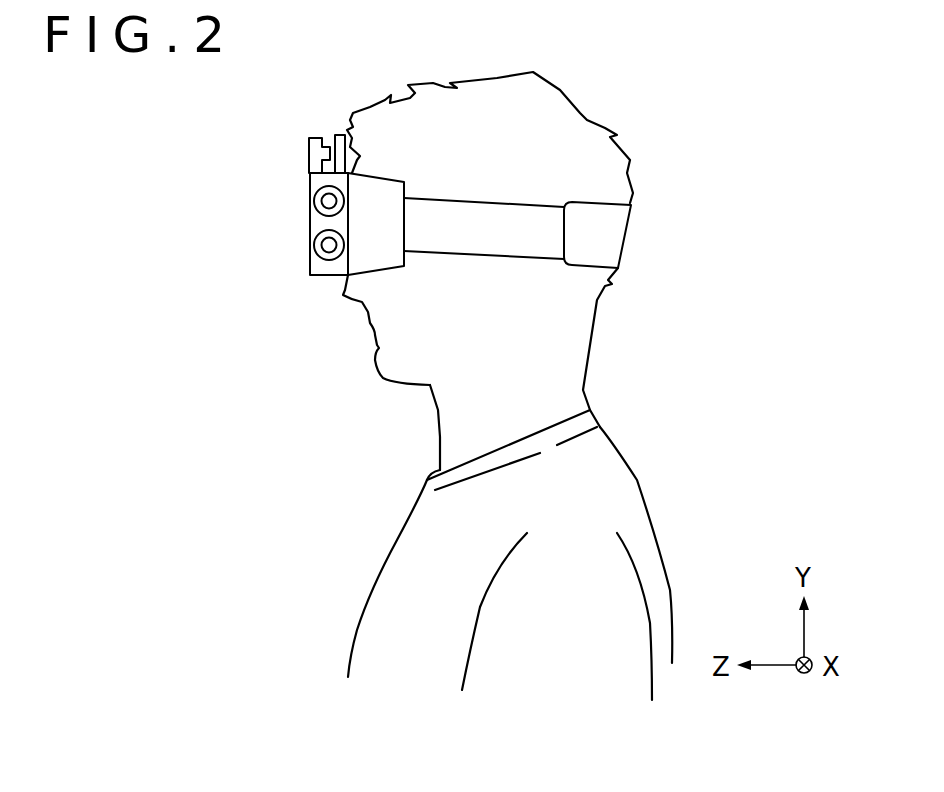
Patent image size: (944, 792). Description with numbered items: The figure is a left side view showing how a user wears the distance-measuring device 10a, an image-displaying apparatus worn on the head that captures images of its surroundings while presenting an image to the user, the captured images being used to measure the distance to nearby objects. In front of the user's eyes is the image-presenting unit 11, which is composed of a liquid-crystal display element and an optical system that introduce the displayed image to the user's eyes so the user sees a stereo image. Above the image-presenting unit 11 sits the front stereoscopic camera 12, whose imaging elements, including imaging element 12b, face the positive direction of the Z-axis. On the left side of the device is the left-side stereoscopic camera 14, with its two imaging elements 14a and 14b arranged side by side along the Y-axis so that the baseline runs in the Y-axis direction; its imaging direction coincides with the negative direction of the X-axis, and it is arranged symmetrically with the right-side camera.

The distance-measuring device 10a is at (262, 143).
The front stereoscopic camera 12 is at (335, 118).
The imaging element 12b is at (315, 137).
The image-presenting unit 11 is at (310, 192).
The left-side stereoscopic camera 14 is at (222, 207).
The imaging element 14a is at (311, 221).
The imaging element 14b is at (311, 264).